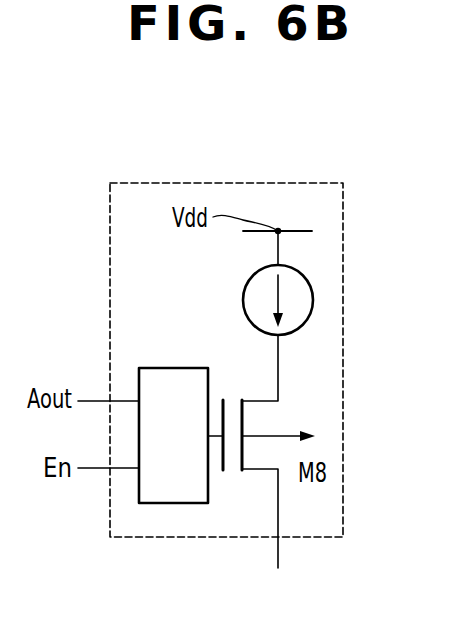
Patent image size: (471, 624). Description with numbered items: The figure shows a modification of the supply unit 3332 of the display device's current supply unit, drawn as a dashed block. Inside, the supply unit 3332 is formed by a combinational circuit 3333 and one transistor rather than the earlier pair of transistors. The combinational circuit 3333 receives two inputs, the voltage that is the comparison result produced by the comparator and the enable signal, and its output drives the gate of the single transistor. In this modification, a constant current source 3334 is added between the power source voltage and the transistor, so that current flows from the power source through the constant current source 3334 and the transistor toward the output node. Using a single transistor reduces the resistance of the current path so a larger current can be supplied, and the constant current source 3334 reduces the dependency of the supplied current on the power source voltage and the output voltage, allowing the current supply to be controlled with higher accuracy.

The supply unit 3332 is at (165, 183).
The combinational circuit 3333 is at (174, 368).
The constant current source 3334 is at (313, 297).